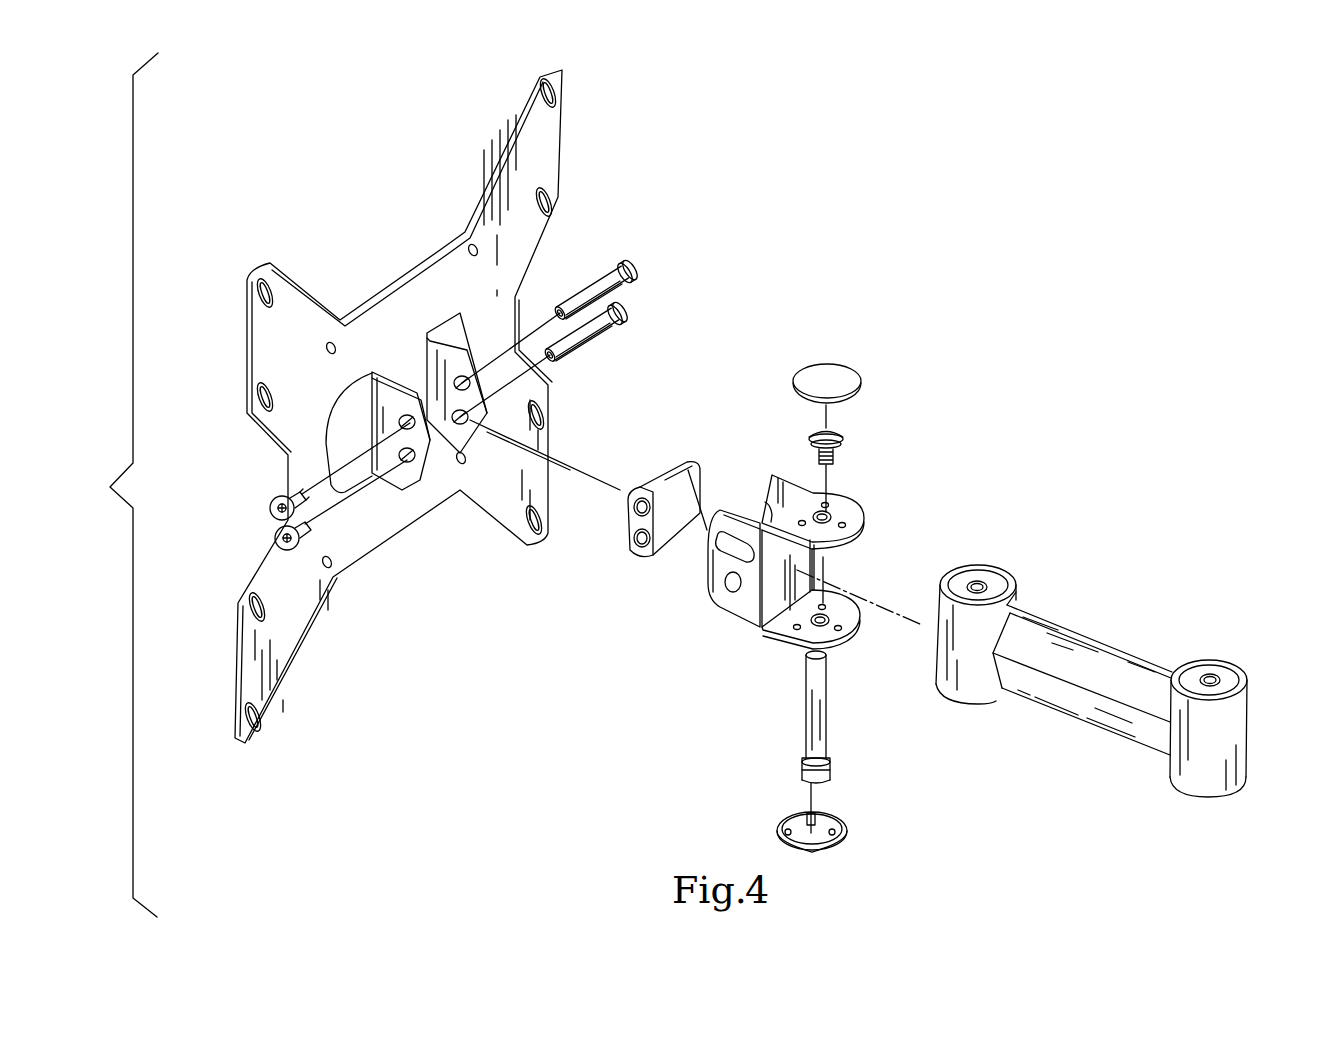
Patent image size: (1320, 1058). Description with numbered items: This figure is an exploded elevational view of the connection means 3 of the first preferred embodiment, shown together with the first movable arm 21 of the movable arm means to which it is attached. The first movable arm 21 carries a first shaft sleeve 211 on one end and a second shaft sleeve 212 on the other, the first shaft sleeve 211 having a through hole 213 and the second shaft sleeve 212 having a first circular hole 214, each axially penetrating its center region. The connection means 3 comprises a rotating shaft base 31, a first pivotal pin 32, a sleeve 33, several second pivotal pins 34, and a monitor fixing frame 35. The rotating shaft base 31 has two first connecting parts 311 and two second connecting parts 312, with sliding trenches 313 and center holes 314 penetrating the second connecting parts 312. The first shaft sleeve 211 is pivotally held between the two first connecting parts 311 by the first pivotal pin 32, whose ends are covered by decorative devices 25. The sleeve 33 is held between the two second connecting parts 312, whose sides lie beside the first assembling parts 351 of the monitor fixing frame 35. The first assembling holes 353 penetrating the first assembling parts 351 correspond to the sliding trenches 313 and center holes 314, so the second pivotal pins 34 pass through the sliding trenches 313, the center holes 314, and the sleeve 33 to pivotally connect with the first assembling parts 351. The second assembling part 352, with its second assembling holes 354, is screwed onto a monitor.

The connection means 3 is at (748, 335).
The first movable arm 21 is at (1132, 655).
The first shaft sleeve 211 is at (967, 690).
The second shaft sleeve 212 is at (1203, 790).
The through hole 213 is at (983, 590).
The first circular hole 214 is at (1218, 681).
The decorative device 25 is at (852, 370).
The rotating shaft base 31 is at (848, 505).
The first connecting part 311 is at (860, 521).
The second connecting part 312 is at (745, 612).
The sliding trench 313 is at (770, 482).
The center hole 314 is at (730, 593).
The first pivotal pin 32 is at (810, 720).
The sleeve 33 is at (630, 545).
The second pivotal pin 34 is at (630, 272).
The monitor fixing frame 35 is at (437, 273).
The first assembling part 351 is at (487, 413).
The second assembling part 352 is at (392, 298).
The first assembling hole 353 is at (458, 382).
The second assembling hole 354 is at (547, 196).